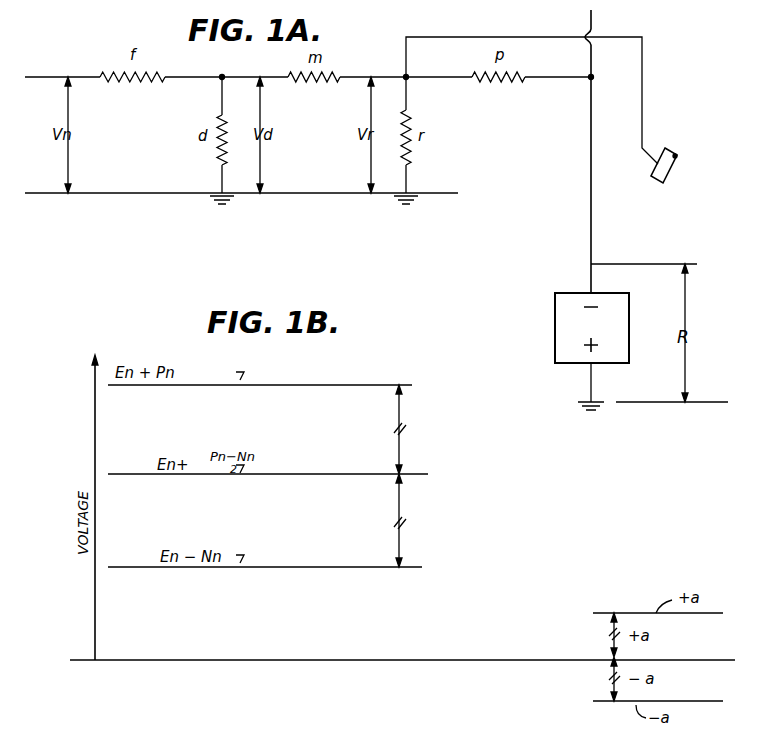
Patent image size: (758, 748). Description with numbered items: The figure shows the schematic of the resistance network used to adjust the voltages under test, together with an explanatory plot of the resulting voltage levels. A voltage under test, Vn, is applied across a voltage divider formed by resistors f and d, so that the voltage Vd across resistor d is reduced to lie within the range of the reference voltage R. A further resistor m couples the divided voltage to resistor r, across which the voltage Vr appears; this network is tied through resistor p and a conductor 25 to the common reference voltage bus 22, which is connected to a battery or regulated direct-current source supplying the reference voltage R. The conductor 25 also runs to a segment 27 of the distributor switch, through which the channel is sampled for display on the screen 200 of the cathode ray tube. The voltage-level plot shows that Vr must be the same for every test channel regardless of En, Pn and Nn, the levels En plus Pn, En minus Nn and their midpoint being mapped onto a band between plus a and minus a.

In FIG. 1A, the common reference voltage bus 22 is at (591, 216).
In FIG. 1A, the conductor 25 is at (642, 65).
In FIG. 1A, the segment of distributor switch 27 is at (676, 156).
In FIG. 1B, the screen of cathode ray tube 200 is at (262, 746).